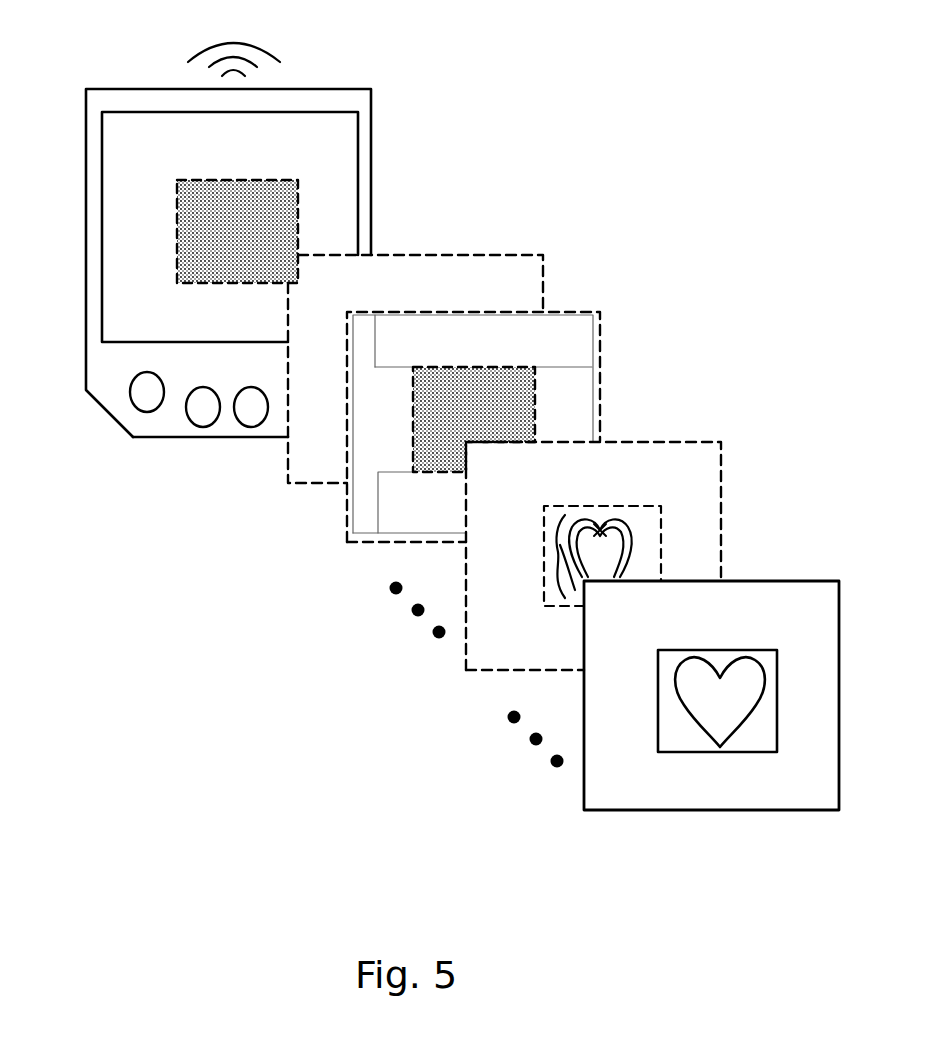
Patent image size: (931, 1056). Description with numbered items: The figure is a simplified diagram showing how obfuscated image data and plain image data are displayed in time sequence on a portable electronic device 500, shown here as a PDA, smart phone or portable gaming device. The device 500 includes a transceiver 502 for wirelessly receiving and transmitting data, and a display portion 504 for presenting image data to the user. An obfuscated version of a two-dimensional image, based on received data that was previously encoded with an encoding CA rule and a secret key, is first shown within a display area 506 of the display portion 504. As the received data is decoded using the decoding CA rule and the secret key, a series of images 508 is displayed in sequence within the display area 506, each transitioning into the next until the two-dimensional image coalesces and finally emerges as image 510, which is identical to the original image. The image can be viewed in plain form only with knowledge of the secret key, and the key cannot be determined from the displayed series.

The portable electronic device 500 is at (148, 437).
The transceiver 502 is at (275, 53).
The display portion 504 is at (358, 142).
The display area 506 is at (298, 222).
The images 508 is at (624, 292).
The two-dimensional image 510 is at (680, 752).